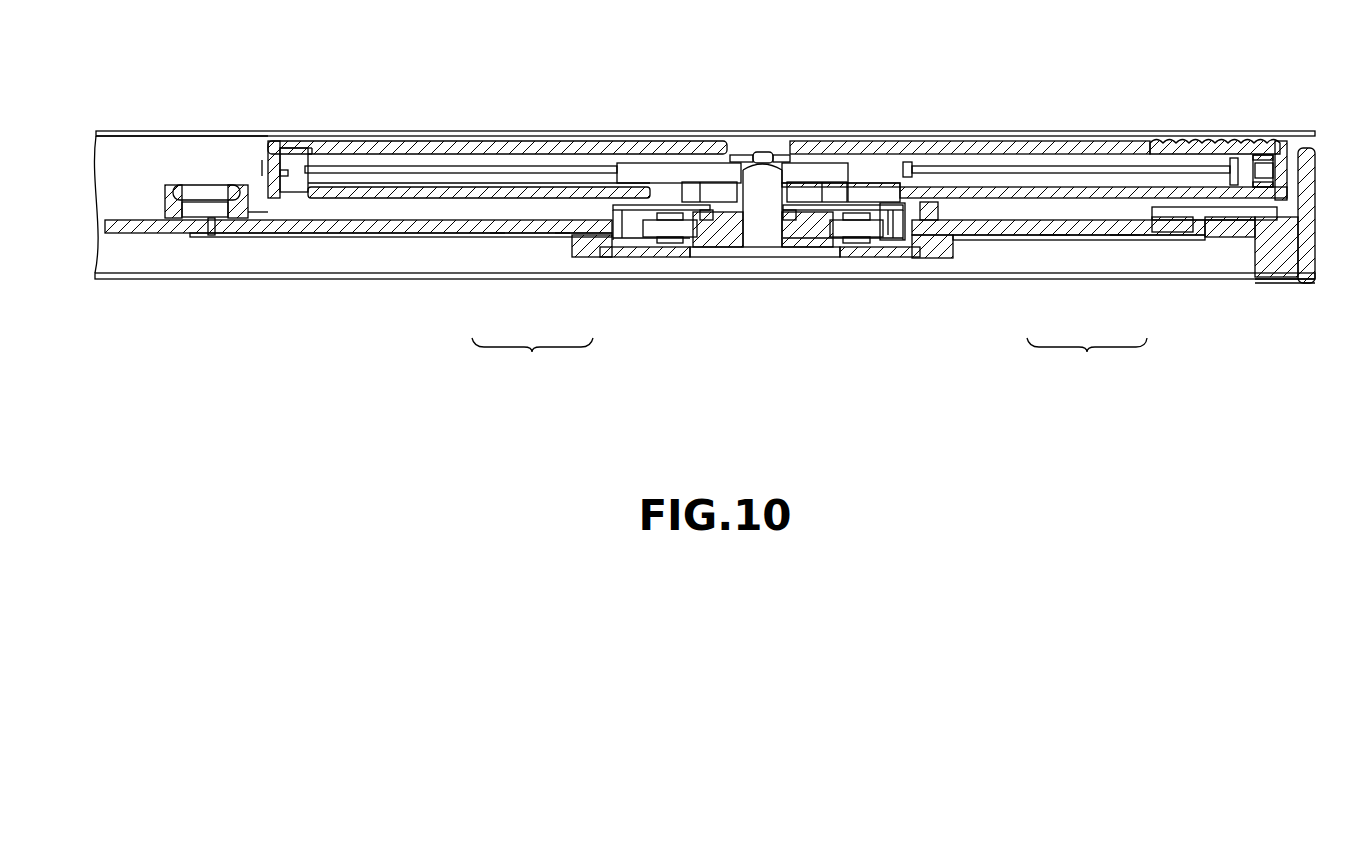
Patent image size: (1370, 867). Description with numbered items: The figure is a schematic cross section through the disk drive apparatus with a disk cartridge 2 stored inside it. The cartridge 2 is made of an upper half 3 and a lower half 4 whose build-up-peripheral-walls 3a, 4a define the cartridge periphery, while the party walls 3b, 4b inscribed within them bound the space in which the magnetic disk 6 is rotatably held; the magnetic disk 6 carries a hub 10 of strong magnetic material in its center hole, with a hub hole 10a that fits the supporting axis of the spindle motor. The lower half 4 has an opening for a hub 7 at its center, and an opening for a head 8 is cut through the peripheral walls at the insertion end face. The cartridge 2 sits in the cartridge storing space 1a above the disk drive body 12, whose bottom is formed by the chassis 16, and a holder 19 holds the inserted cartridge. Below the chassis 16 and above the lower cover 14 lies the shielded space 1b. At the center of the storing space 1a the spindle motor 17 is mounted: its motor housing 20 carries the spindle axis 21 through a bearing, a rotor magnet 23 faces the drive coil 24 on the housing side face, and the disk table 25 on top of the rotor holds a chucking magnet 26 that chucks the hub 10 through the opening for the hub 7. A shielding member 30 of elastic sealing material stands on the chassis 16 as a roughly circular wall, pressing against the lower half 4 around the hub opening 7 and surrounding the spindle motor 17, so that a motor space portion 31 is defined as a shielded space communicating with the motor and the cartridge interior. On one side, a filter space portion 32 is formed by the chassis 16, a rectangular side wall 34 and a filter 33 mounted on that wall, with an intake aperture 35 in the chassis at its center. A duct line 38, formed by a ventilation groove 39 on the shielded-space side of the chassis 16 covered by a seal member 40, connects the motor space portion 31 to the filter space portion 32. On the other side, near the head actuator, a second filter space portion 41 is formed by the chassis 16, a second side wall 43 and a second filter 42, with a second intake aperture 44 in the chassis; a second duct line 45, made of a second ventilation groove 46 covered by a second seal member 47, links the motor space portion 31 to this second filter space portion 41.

The cartridge storing space 1a is at (120, 150).
The shielded space 1b is at (117, 262).
The disk cartridge 2 is at (246, 142).
The upper half 3 is at (330, 147).
The build-up-peripheral-wall 3a is at (262, 152).
The party wall 3b is at (1262, 150).
The lower half 4 is at (388, 193).
The build-up-peripheral-wall 4a is at (262, 212).
The party wall 4b is at (1297, 253).
The magnetic disk 6 is at (366, 178).
The opening for a hub 7 is at (660, 187).
The opening for a head 8 is at (262, 168).
The hub 10 is at (668, 170).
The hub hole 10a is at (755, 153).
The disk drive body 12 is at (1335, 163).
The lower cover 14 is at (1263, 284).
The chassis 16 is at (437, 224).
The spindle motor 17 is at (724, 256).
The holder 19 is at (432, 170).
The motor housing 20 is at (838, 224).
The spindle axis 21 is at (763, 232).
The rotor magnet 23 is at (892, 215).
The drive coil 24 is at (858, 238).
The disk table 25 is at (827, 185).
The chucking magnet 26 is at (803, 187).
The shielding member 30 is at (940, 207).
The motor space portion 31 is at (610, 203).
The filter space portion 32 is at (1230, 217).
The filter 33 is at (1262, 170).
The side wall 34 is at (1140, 208).
The intake aperture 35 is at (1185, 213).
The duct line 38 is at (1087, 360).
The ventilation groove 39 is at (1120, 238).
The seal member 40 is at (1057, 240).
The second filter space portion 41 is at (175, 215).
The second filter 42 is at (190, 193).
The second side wall 43 is at (212, 230).
The second intake aperture 44 is at (190, 212).
The second duct line 45 is at (532, 360).
The second ventilation groove 46 is at (562, 238).
The second seal member 47 is at (497, 238).